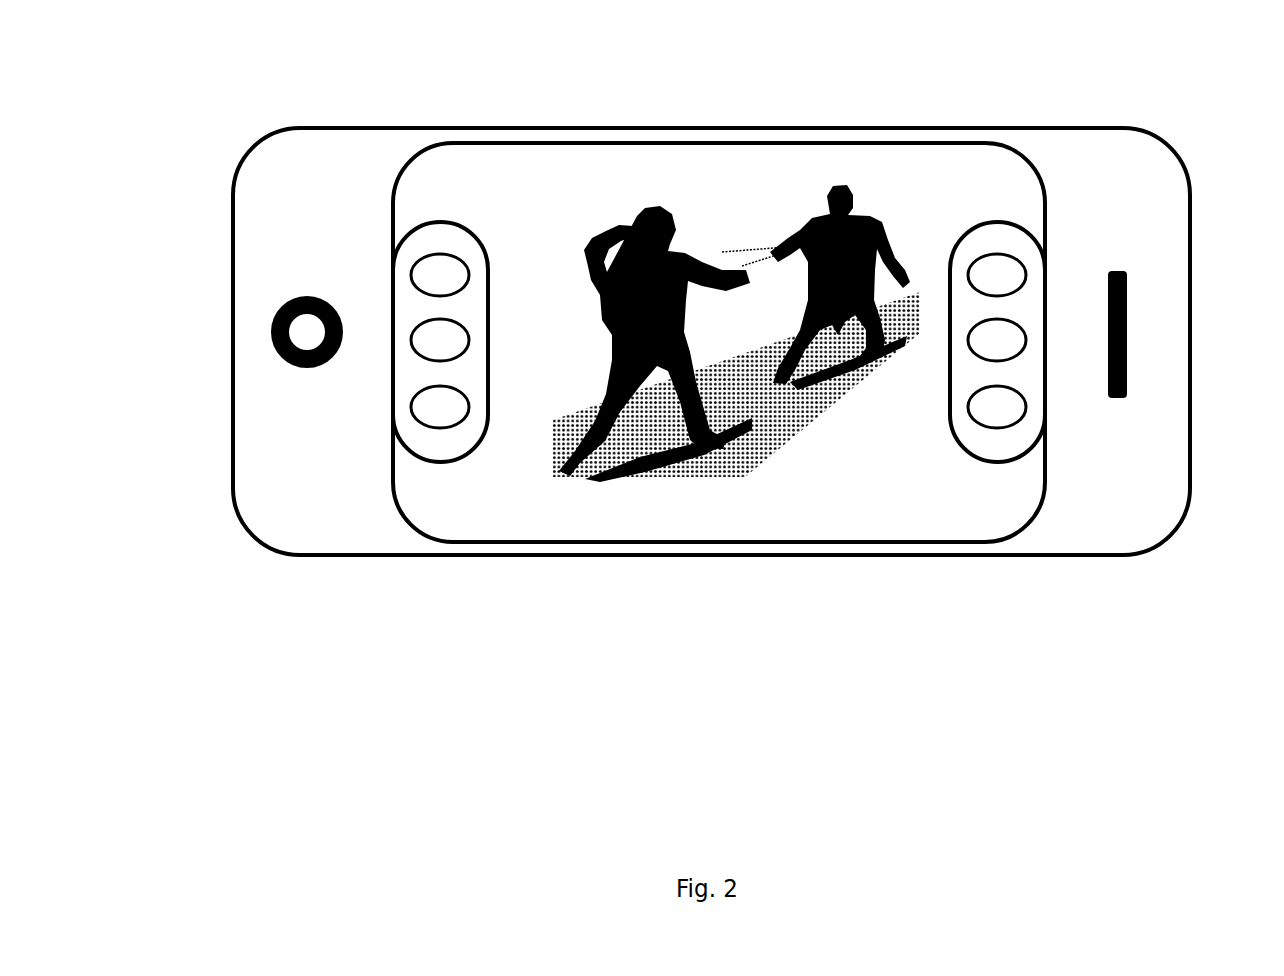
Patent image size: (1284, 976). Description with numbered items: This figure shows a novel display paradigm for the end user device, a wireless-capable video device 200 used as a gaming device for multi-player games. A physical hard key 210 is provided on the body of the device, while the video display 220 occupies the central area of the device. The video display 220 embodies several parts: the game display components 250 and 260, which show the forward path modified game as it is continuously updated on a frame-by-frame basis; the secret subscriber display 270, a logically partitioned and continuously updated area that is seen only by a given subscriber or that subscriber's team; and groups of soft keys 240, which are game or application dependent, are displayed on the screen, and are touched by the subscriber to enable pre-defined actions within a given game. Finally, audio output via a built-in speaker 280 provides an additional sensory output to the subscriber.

The video device 200 is at (315, 567).
The hard key 210 is at (275, 290).
The video display 220 is at (1044, 120).
The soft keys 240 is at (460, 212).
The game display component 250 is at (651, 200).
The game display component 260 is at (845, 172).
The secret subscriber display 270 is at (670, 507).
The built-in speaker 280 is at (1118, 263).